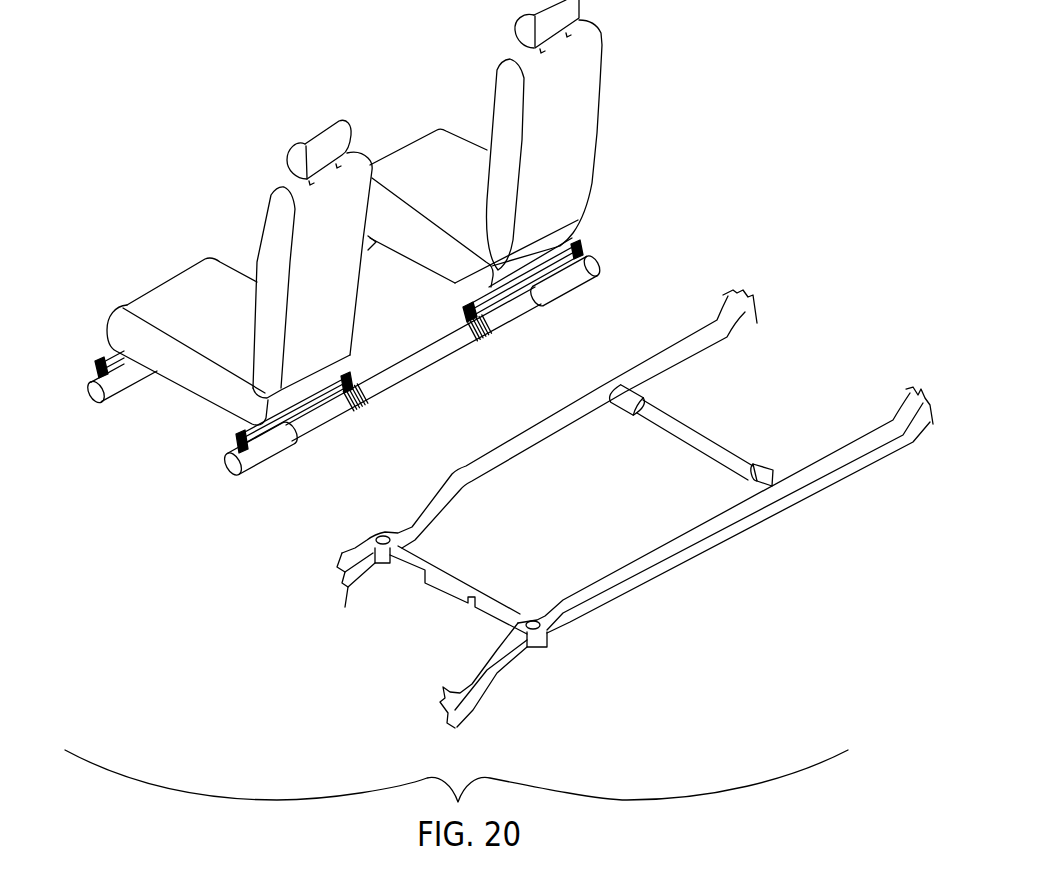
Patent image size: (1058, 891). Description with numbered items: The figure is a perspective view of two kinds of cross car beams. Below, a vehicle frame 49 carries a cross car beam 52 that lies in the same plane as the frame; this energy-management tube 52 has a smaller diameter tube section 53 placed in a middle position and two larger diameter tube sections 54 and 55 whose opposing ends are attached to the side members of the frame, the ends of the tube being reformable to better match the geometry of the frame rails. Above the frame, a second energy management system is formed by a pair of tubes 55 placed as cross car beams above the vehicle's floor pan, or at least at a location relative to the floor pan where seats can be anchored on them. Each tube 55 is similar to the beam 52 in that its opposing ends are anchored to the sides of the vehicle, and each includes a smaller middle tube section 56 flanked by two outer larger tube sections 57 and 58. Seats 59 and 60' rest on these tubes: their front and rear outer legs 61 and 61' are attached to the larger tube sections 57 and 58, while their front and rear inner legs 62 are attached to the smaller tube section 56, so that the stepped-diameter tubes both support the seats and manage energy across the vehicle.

The frame 49 is at (668, 318).
The cross car beam 52 is at (682, 442).
The smaller diameter tube section 53 is at (705, 430).
The larger diameter tube section 54 is at (640, 389).
The tube 55 is at (77, 370).
The smaller middle tube section 56 is at (437, 363).
The outer larger tube section 57 is at (270, 455).
The outer larger tube section 58 is at (577, 282).
The seat 59 is at (272, 188).
The seat 60' is at (485, 143).
The front and rear outer legs 61 is at (224, 405).
The front and rear outer legs 61' is at (551, 260).
The front and rear inner legs 62 is at (468, 308).